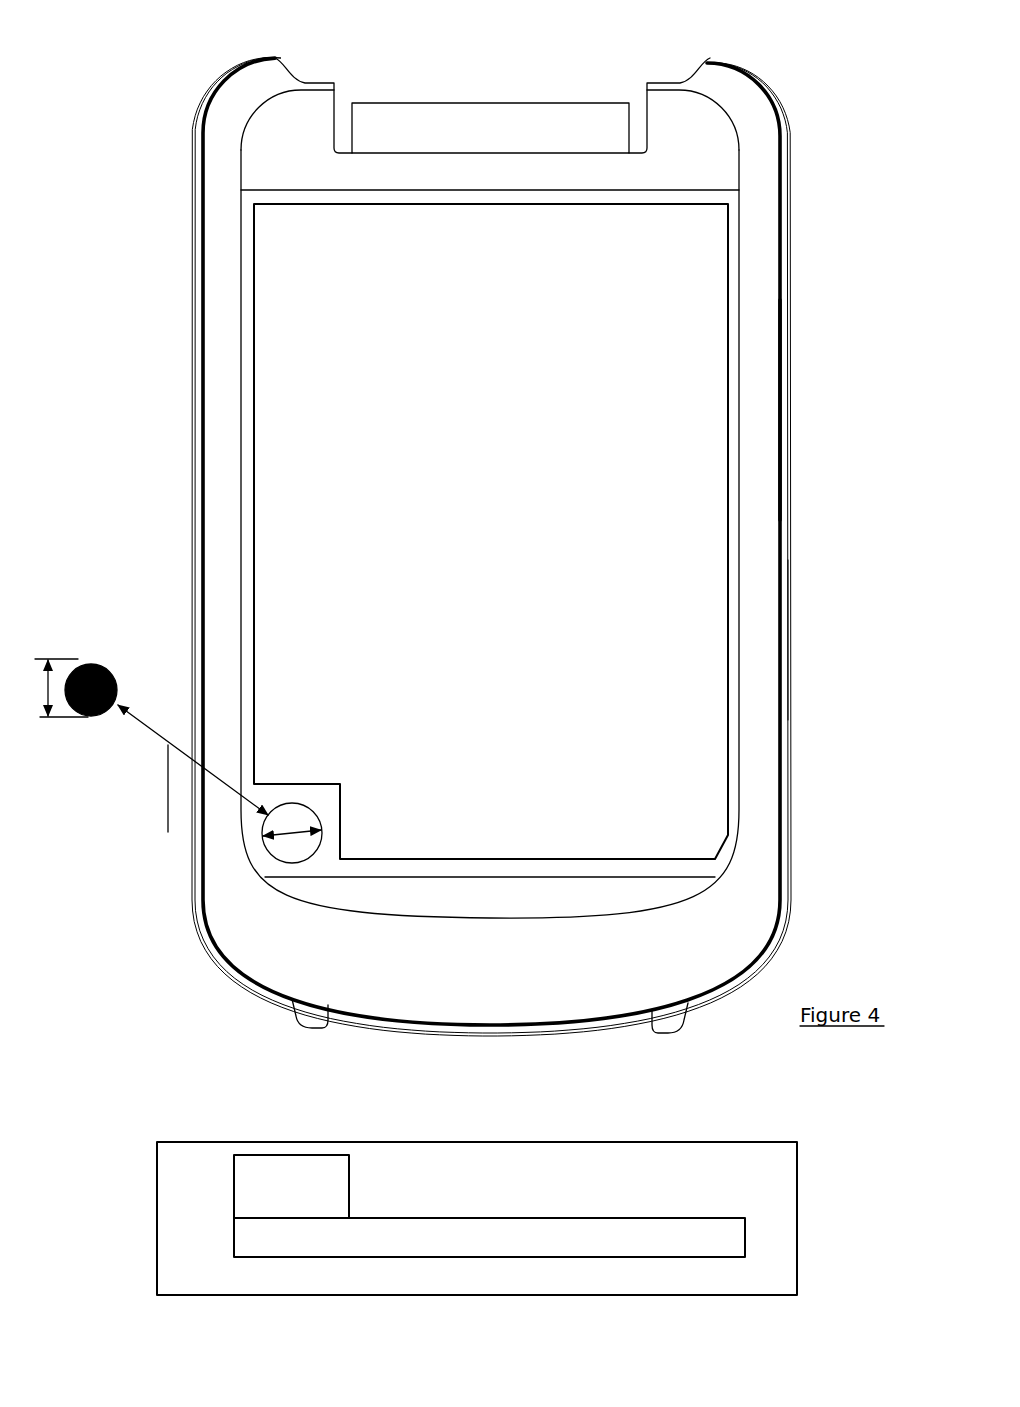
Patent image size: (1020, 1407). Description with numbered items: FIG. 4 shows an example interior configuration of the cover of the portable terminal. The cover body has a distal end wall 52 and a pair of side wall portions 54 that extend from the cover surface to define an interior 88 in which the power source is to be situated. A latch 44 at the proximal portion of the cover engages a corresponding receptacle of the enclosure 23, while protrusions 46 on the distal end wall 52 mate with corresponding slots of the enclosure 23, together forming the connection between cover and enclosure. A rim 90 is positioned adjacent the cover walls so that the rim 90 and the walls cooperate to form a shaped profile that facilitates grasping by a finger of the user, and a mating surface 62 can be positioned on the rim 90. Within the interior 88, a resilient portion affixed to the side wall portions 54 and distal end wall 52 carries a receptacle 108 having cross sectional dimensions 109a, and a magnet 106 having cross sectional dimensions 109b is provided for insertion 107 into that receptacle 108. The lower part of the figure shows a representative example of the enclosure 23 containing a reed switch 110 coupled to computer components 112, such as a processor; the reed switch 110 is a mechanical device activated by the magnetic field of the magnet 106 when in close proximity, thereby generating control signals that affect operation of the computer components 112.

The enclosure 23 is at (797, 1180).
The latch 44 is at (551, 128).
The protrusions 46 is at (307, 1023).
The distal end wall 52 is at (422, 972).
The side wall portions 54 is at (243, 358).
The mating surface 62 is at (778, 573).
The interior 88 is at (461, 503).
The rim 90 is at (768, 408).
The magnet 106 is at (107, 665).
The insertion 107 is at (193, 776).
The receptacle 108 is at (268, 858).
The cross sectional dimensions 109a is at (298, 830).
The cross sectional dimensions 109b is at (44, 717).
The reed switch 110 is at (298, 1211).
The computer components 112 is at (706, 1232).